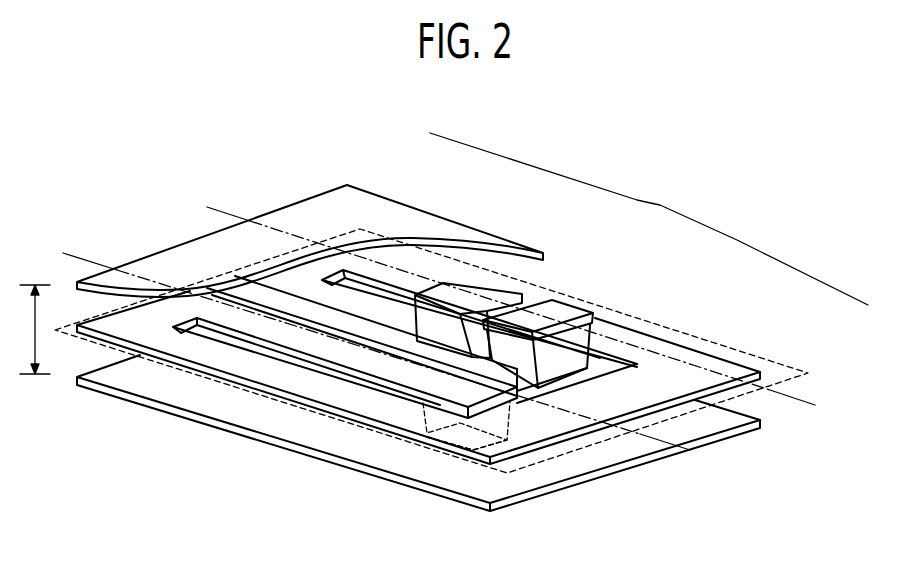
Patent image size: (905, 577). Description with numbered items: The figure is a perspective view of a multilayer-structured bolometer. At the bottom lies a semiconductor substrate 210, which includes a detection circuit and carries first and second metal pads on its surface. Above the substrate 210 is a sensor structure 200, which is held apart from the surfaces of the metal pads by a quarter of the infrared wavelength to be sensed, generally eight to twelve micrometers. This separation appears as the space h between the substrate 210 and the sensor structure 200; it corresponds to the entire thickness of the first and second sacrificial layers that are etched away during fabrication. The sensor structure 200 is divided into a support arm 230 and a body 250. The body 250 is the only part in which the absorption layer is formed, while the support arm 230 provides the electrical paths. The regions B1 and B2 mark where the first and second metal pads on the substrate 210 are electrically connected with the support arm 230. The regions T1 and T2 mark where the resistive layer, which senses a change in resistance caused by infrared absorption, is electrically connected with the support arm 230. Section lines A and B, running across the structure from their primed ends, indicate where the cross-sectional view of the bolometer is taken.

The sensor structure 200 is at (660, 205).
The semiconductor substrate 210 is at (213, 400).
The support arm 230 is at (793, 367).
The body 250 is at (380, 210).
The first connection region T1 is at (553, 360).
The second connection region T2 is at (445, 340).
The first pad connection region B1 is at (477, 440).
The second pad connection region B2 is at (450, 432).
The space h is at (33, 329).
The section line A-A' A is at (382, 357).
The section line B-B' B is at (514, 306).